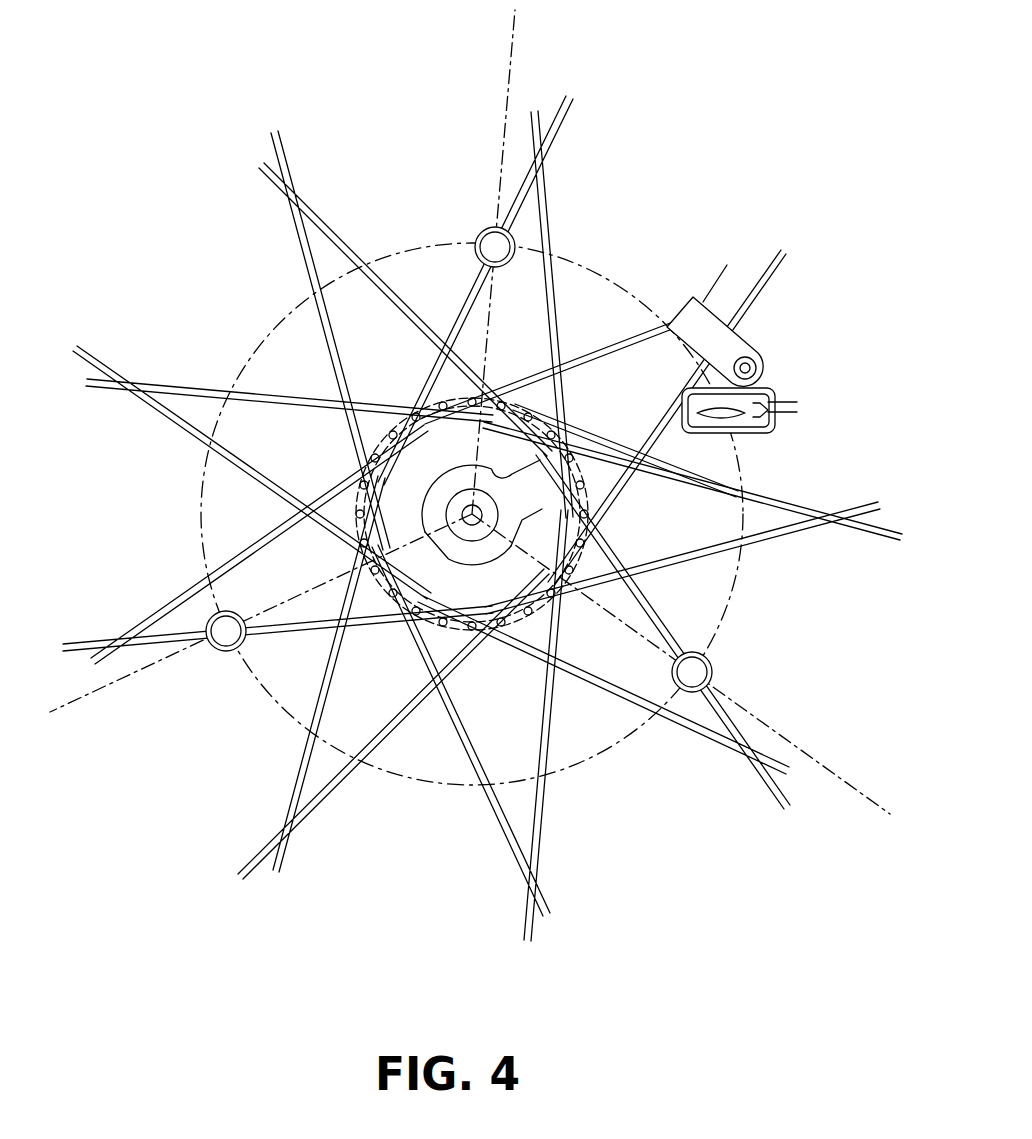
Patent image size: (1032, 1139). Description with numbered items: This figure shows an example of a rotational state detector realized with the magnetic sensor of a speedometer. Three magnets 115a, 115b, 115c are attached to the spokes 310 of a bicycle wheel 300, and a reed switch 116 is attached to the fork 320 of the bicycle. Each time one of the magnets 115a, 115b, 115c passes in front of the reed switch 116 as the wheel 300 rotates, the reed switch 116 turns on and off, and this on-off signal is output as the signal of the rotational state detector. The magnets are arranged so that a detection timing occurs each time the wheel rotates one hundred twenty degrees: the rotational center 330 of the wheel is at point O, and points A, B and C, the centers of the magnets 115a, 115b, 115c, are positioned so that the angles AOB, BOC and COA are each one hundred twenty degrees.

The wheel 300 is at (780, 753).
The spokes 310 is at (537, 165).
The fork 320 is at (652, 378).
The rotational center 330 is at (462, 508).
The magnet 115a is at (478, 230).
The magnet 115b is at (212, 655).
The magnet 115c is at (710, 647).
The reed switch 116 is at (745, 434).